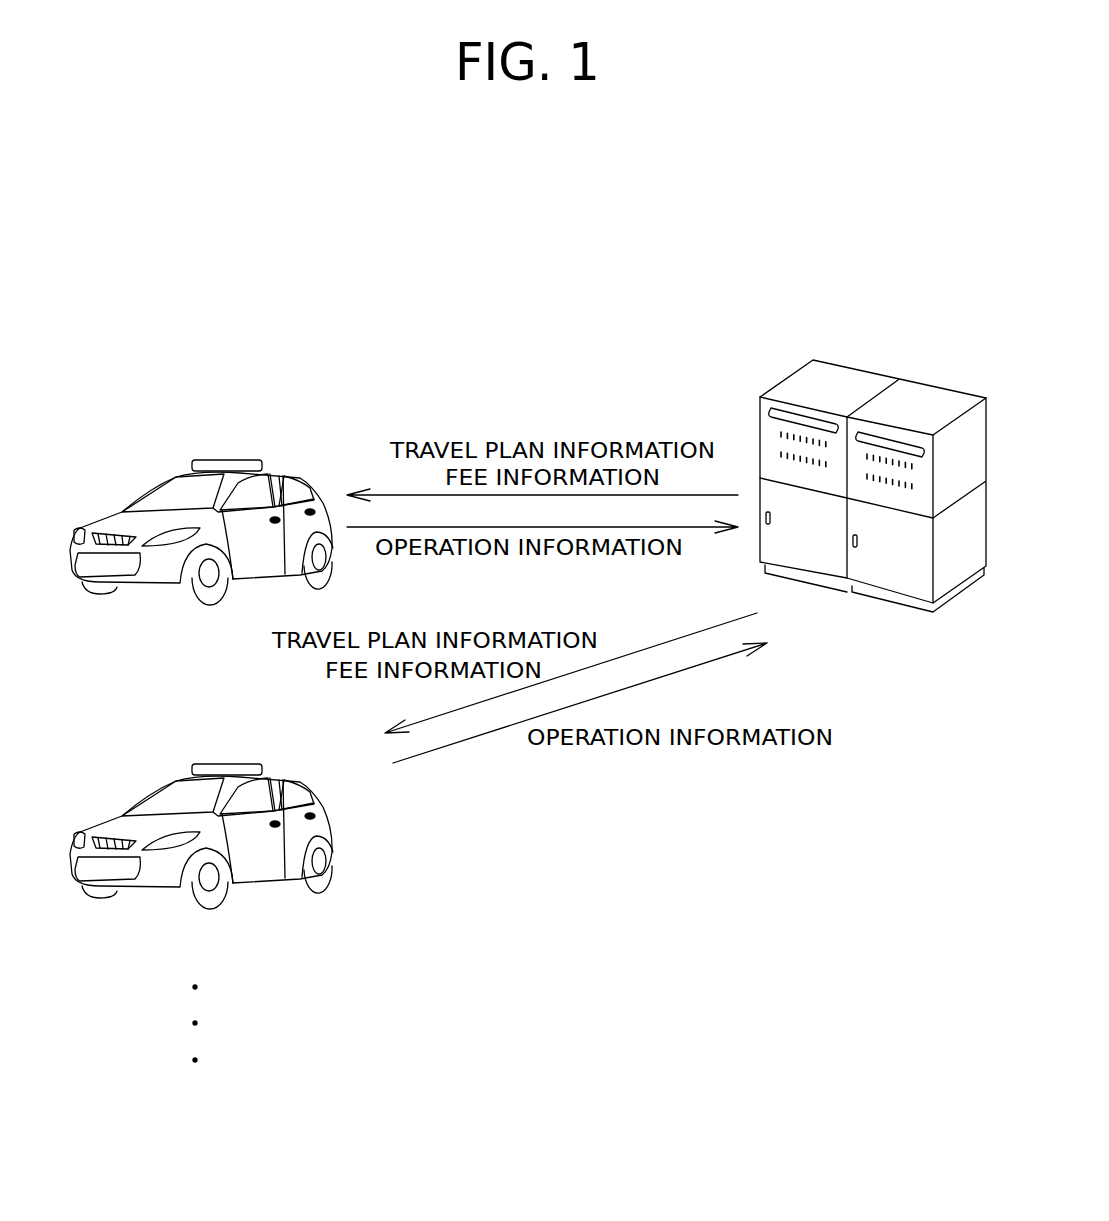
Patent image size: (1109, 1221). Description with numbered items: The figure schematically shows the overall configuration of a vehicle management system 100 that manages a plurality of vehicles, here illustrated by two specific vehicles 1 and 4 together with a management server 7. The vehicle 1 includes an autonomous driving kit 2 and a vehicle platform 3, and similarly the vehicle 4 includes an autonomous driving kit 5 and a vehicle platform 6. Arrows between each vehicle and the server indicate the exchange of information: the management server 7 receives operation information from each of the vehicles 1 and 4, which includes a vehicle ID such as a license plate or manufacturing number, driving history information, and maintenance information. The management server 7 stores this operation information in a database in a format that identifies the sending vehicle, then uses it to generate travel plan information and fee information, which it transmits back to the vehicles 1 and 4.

The vehicle management system 100 is at (488, 263).
The vehicle 1 is at (201, 484).
The autonomous driving kit 2 is at (230, 463).
The vehicle platform 3 is at (272, 475).
The vehicle 4 is at (201, 787).
The autonomous driving kit 5 is at (230, 768).
The vehicle platform 6 is at (273, 778).
The management server 7 is at (922, 403).